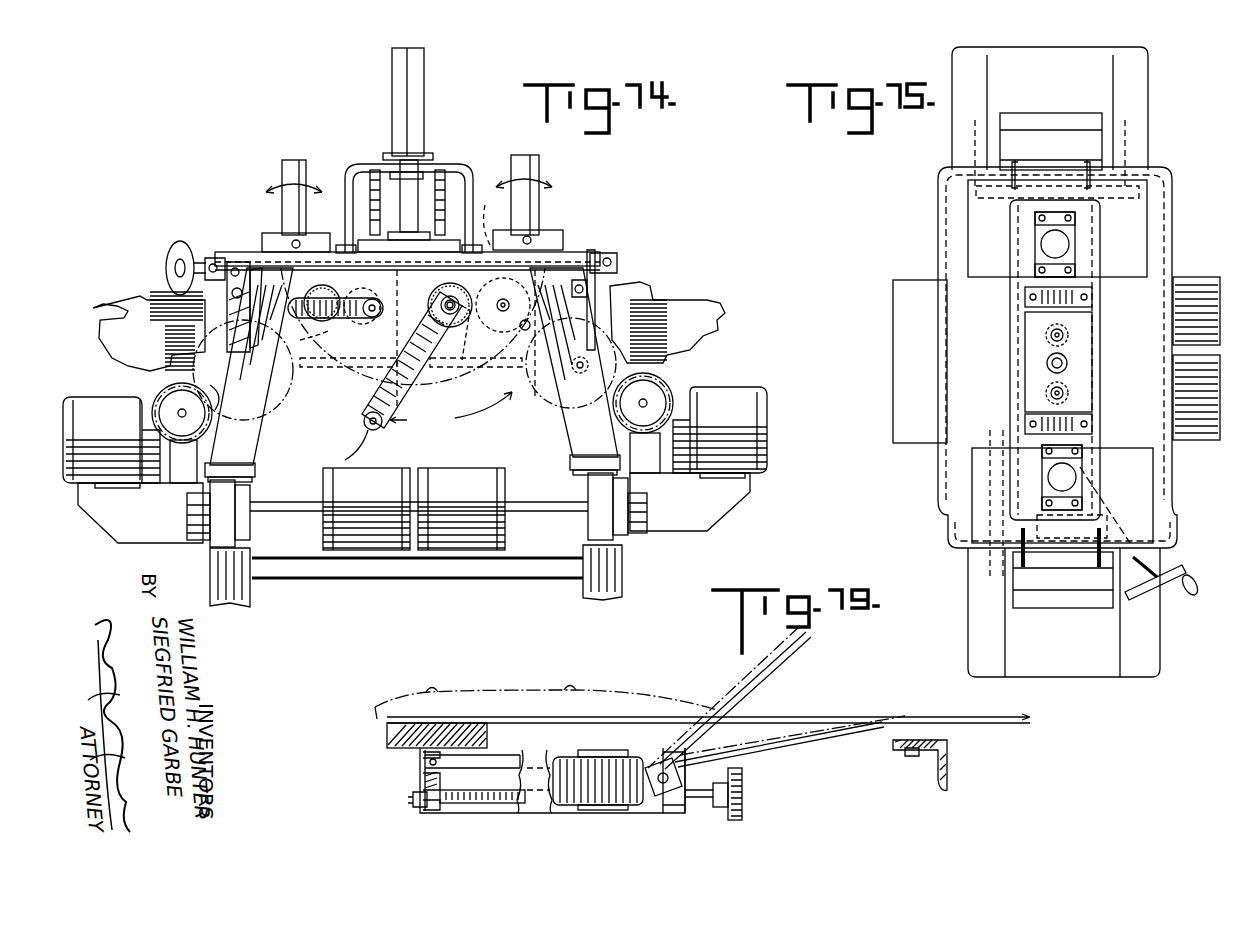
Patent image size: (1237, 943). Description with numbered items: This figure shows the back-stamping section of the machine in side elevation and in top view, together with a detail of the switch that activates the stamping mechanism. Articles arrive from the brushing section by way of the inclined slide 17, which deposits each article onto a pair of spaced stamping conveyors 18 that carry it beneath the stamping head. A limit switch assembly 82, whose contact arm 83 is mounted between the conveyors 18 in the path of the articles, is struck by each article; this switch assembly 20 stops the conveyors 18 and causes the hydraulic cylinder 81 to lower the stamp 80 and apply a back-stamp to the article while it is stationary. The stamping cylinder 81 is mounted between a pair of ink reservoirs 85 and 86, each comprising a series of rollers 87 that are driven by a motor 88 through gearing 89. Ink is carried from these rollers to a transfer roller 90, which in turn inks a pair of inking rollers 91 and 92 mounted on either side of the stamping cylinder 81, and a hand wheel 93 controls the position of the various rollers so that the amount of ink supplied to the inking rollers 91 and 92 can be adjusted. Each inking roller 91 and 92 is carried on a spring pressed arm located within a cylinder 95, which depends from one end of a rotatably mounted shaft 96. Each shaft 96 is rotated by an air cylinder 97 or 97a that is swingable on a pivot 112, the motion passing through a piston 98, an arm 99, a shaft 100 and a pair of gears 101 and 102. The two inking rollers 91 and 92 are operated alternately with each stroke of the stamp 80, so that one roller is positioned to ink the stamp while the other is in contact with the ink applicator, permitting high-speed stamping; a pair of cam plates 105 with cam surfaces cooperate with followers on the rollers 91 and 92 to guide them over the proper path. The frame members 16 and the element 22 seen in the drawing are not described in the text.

In FIG. 14, the inclined slide 17 is at (402, 38).
In FIG. 14, the air cylinder 97 is at (293, 178).
In FIG. 15, the air cylinder 97 is at (1053, 473).
In FIG. 14, the air cylinder 97a is at (526, 175).
In FIG. 15, the air cylinder 97a is at (1062, 246).
In FIG. 14, the pivot 112 is at (300, 241).
In FIG. 14, the piston 98 is at (422, 254).
In FIG. 14, the transfer roller 90 is at (240, 288).
In FIG. 14, the hand wheel 93 is at (166, 266).
In FIG. 15, the hand wheel 93 is at (1188, 568).
In FIG. 14, the ink reservoir 85 is at (126, 312).
In FIG. 15, the ink reservoir 85 is at (1060, 606).
In FIG. 14, the rollers 87 is at (166, 340).
In FIG. 14, the ink reservoir 86 is at (688, 304).
In FIG. 15, the ink reservoir 86 is at (1092, 135).
In FIG. 14, the motor 88 is at (100, 405).
In FIG. 14, the gearing 89 is at (272, 402).
In FIG. 14, the support arm 16 is at (410, 375).
In FIG. 14, the inking roller 92 is at (266, 308).
In FIG. 14, the hydraulic cylinder 81 is at (384, 366).
In FIG. 15, the hydraulic cylinder 81 is at (1066, 368).
In FIG. 14, the shaft 100 is at (387, 295).
In FIG. 14, the shaft 96 is at (438, 300).
In FIG. 14, the arm 99 is at (414, 335).
In FIG. 14, the gear 101 is at (462, 341).
In FIG. 14, the gear 102 is at (394, 346).
In FIG. 14, the cylinder 95 is at (460, 351).
In FIG. 14, the stamp 80 is at (462, 418).
In FIG. 14, the cam plates 105 is at (282, 416).
In FIG. 14, the inking roller 91 is at (347, 448).
In FIG. 15, the stamping conveyors 18 is at (1198, 285).
In FIG. 19, the limit switch assembly 82 is at (446, 824).
In FIG. 19, the rod 22 is at (660, 692).
In FIG. 19, the contact arm 83 is at (768, 745).
In FIG. 19, the switch assembly 20 is at (488, 680).